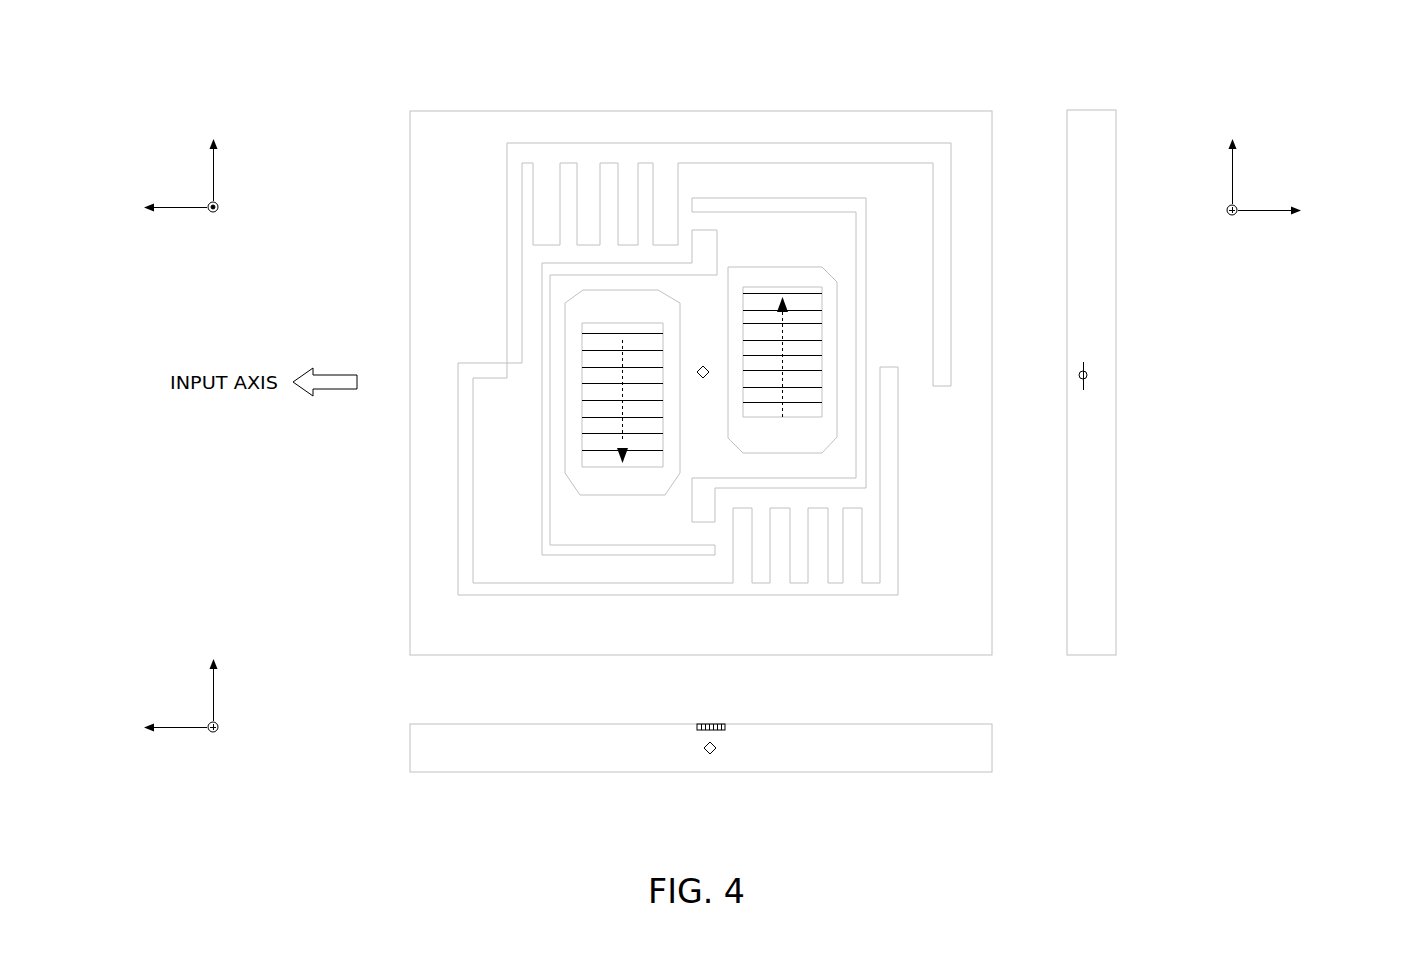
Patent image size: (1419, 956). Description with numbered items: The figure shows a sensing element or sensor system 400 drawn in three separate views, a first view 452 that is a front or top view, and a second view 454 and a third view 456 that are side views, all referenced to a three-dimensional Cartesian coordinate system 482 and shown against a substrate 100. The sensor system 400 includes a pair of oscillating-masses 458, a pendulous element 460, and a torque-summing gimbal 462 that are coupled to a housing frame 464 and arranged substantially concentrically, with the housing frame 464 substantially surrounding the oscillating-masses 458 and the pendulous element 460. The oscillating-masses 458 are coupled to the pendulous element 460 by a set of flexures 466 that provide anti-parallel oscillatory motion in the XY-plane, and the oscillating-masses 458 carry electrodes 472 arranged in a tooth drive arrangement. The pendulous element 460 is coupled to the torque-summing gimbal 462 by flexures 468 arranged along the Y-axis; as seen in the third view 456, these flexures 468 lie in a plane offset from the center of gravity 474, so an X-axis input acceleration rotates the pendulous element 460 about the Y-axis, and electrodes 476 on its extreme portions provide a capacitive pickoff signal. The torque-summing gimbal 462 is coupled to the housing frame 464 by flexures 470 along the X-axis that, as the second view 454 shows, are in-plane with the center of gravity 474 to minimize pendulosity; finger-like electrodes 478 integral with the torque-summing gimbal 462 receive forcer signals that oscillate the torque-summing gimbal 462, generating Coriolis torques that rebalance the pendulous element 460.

The substrate 100 is at (511, 735).
The sensor system 400 is at (308, 62).
The first view 452 is at (405, 85).
The second view 454 is at (1100, 95).
The third view 456 is at (405, 740).
The oscillating-masses 458 is at (623, 490).
The pendulous element 460 is at (780, 233).
The torque-summing gimbal 462 is at (512, 527).
The housing frame 464 is at (615, 130).
The flexures 466 is at (582, 305).
The flexures 468 is at (707, 208).
The flexures 470 is at (473, 377).
The electrodes 472 is at (606, 362).
The center of gravity 474 is at (700, 377).
The electrodes 476 is at (1085, 362).
The electrodes 478 is at (560, 245).
The three-dimensional Cartesian coordinate system 482 is at (173, 150).